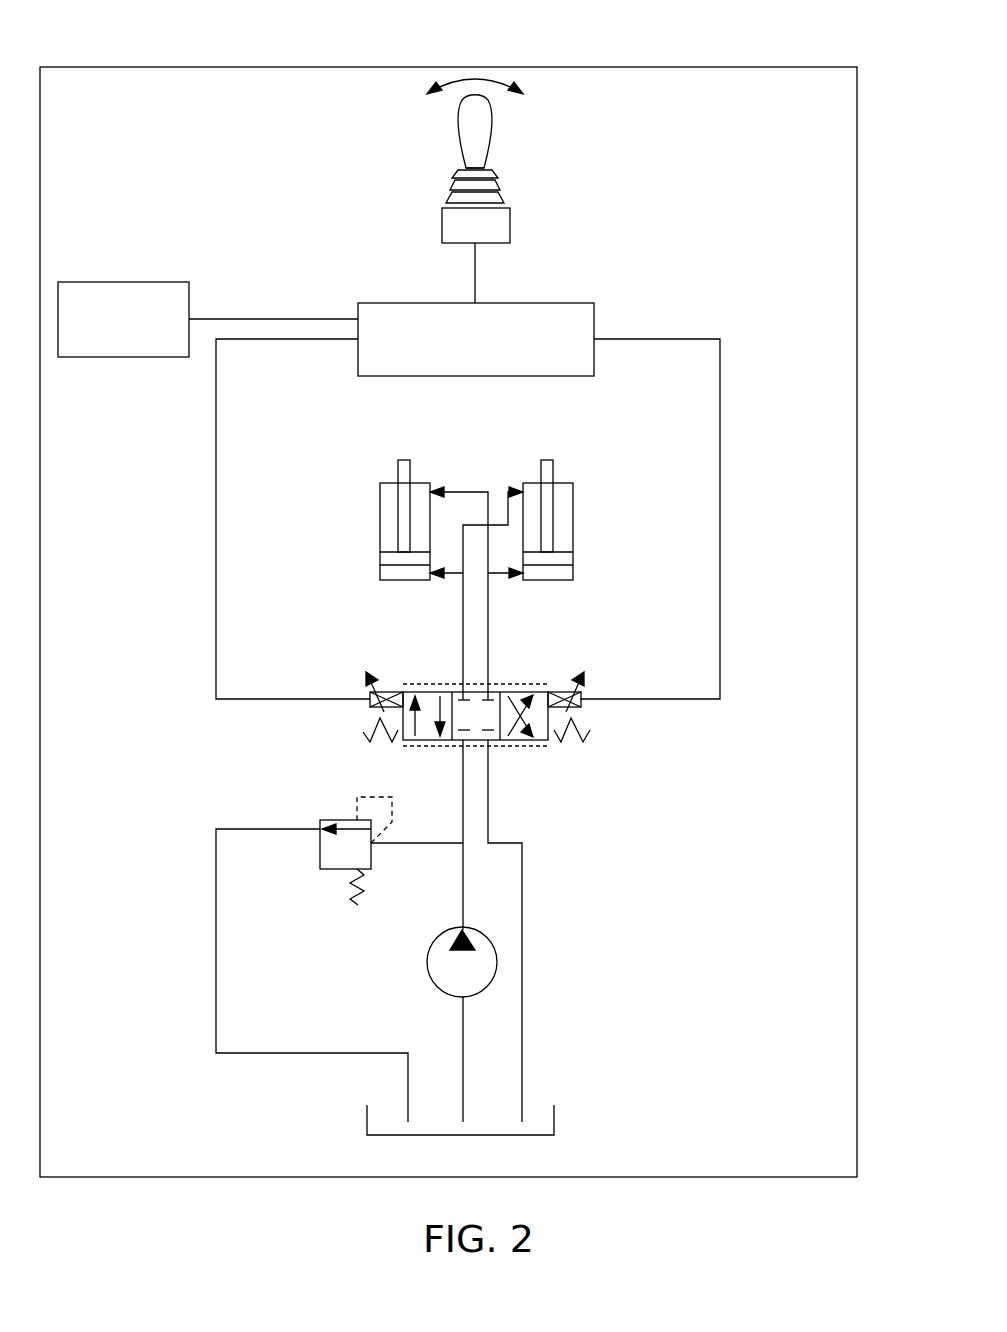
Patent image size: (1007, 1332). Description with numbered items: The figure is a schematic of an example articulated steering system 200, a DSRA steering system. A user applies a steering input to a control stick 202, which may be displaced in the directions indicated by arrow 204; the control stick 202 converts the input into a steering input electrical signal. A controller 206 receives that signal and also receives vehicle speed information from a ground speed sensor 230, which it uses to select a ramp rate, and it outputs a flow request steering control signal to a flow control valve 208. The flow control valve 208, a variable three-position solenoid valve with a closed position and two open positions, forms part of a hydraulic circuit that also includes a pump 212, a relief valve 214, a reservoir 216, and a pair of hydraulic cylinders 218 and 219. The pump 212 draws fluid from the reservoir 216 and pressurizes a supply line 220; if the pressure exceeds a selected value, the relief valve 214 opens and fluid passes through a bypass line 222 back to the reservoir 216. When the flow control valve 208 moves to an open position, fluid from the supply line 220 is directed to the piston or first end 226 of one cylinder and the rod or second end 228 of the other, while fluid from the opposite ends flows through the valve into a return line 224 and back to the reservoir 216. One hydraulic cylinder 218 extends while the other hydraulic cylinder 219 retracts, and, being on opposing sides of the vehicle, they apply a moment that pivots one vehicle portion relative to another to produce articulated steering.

The articulated steering system 200 is at (710, 67).
The control stick 202 is at (500, 180).
The arrow 204 is at (453, 84).
The controller 206 is at (596, 303).
The flow control valve 208 is at (366, 700).
The pump 212 is at (497, 961).
The relief valve 214 is at (320, 826).
The reservoir 216 is at (555, 1120).
The hydraulic cylinder 218 is at (378, 530).
The hydraulic cylinder 219 is at (574, 521).
The supply line 220 is at (462, 792).
The bypass line 222 is at (216, 938).
The return line 224 is at (522, 892).
The first end 226 is at (378, 573).
The second end 228 is at (378, 489).
The ground speed sensor 230 is at (149, 282).